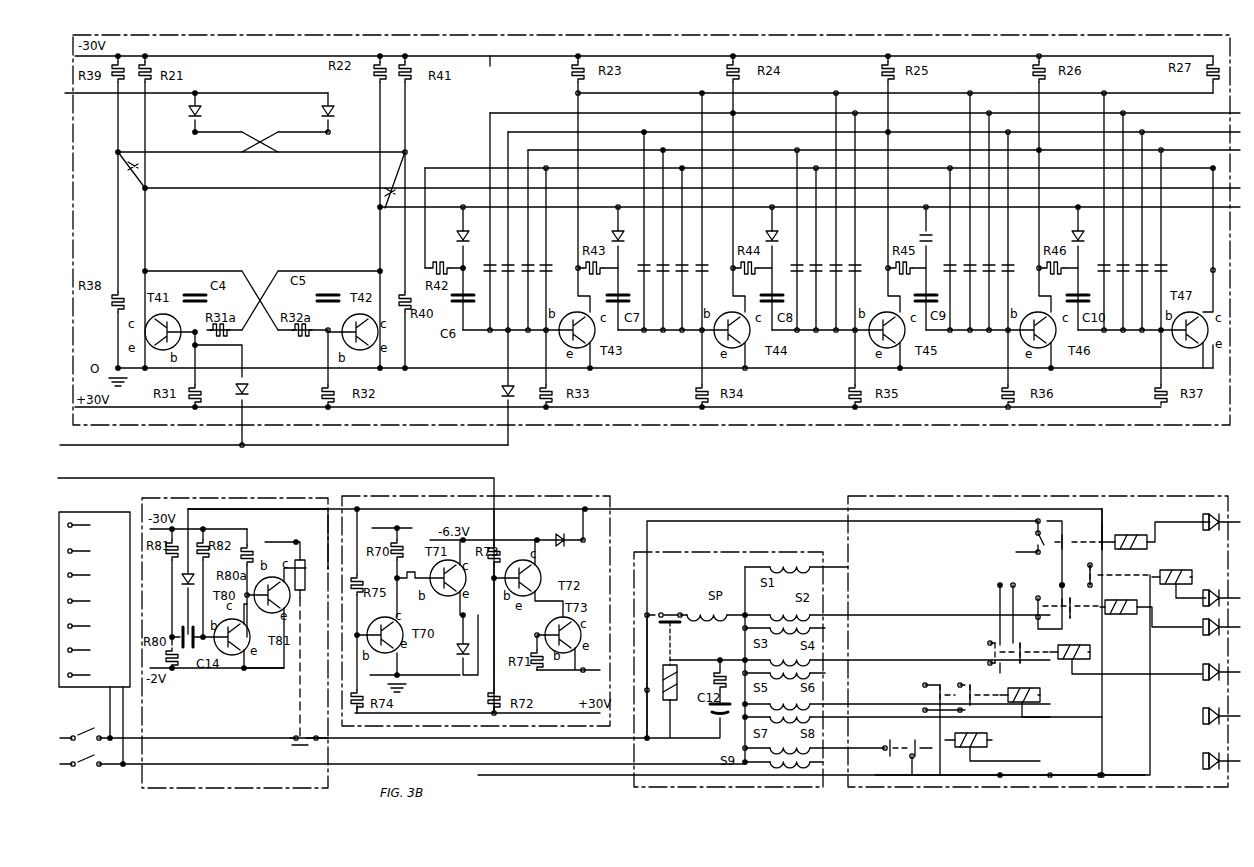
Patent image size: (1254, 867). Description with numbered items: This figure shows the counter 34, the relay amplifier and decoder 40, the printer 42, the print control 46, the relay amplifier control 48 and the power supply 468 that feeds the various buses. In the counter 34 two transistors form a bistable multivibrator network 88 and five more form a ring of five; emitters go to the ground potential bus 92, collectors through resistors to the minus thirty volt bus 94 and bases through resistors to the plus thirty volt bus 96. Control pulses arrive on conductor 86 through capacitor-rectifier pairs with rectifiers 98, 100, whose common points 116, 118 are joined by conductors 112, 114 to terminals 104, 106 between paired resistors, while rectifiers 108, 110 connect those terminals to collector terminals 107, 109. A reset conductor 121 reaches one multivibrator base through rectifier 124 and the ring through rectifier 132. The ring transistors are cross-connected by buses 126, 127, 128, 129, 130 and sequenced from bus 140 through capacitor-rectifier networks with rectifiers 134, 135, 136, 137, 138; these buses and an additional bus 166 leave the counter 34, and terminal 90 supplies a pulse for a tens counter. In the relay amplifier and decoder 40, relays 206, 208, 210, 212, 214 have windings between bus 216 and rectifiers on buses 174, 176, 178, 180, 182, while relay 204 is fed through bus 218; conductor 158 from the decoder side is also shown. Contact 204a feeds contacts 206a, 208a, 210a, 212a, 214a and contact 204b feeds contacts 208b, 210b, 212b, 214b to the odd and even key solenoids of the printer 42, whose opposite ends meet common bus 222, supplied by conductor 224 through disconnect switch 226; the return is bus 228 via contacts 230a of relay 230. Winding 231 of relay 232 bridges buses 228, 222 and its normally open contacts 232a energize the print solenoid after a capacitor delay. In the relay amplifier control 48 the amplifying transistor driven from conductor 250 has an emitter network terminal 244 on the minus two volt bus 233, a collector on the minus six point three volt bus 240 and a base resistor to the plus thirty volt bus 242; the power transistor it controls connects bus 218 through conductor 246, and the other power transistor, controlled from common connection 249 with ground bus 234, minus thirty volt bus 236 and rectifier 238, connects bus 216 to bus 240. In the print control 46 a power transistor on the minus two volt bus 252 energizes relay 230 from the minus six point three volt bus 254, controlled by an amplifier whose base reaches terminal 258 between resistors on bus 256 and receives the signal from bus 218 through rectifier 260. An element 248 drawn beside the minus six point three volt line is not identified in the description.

The counter 34 is at (775, 424).
The relay amplifier and decoder 40 is at (952, 496).
The printer 42 is at (724, 549).
The print control 46 is at (140, 782).
The relay amplifier control 48 is at (562, 494).
The conductor 86 is at (103, 93).
The bistable multivibrator network 88 is at (270, 121).
The terminal 90 is at (1210, 268).
The ground potential bus 92 is at (649, 369).
The bus 94 is at (490, 64).
The bus 96 is at (639, 408).
The rectifier 98 is at (189, 114).
The rectifier 100 is at (334, 114).
The common point or terminal 104 is at (116, 152).
The common point or terminal 106 is at (406, 153).
The terminal 107 is at (147, 190).
The rectifier 108 is at (116, 180).
The terminal 109 is at (376, 209).
The rectifier 110 is at (378, 179).
The conductor 112 is at (212, 139).
The conductor 114 is at (312, 136).
The point 116 is at (331, 132).
The point 118 is at (192, 132).
The conductor 121 is at (126, 448).
The rectifier 124 is at (250, 390).
The bus 126 is at (1156, 92).
The bus 127 is at (1190, 112).
The bus 128 is at (1206, 131).
The bus 129 is at (1203, 149).
The bus 130 is at (1200, 167).
The rectifier 132 is at (500, 388).
The rectifier 134 is at (458, 230).
The rectifier 135 is at (614, 230).
The rectifier 136 is at (770, 230).
The rectifier 137 is at (922, 230).
The rectifier 138 is at (1074, 230).
The bus 140 is at (1203, 206).
The additional bus 166 is at (1198, 187).
The conductor 158 is at (1214, 518).
The bus 174 is at (1214, 604).
The bus 176 is at (1218, 635).
The bus 178 is at (1218, 682).
The bus 180 is at (1218, 725).
The bus 182 is at (1218, 770).
The relay 204 is at (1142, 542).
The contacts 204a is at (1090, 530).
The contacts 204b is at (1038, 540).
The relay 206 is at (1176, 573).
The contacts 206a is at (1097, 565).
The relay 208 is at (1121, 603).
The contacts 208a is at (1070, 606).
The contacts 208b is at (1040, 606).
The relay 210 is at (1071, 648).
The contacts 210a is at (1020, 643).
The contacts 210b is at (993, 652).
The relay 212 is at (1021, 691).
The contacts 212a is at (967, 689).
The contacts 212b is at (940, 695).
The relay 214 is at (969, 736).
The contacts 214a is at (915, 762).
The contacts 214b is at (885, 747).
The bus 216 is at (478, 748).
The bus 218 is at (721, 509).
The common bus 222 is at (734, 577).
The conductor 224 is at (162, 764).
The disconnect switch 226 is at (97, 734).
The bus 228 is at (391, 740).
The relay 230 is at (300, 696).
The contacts 230a is at (297, 736).
The energizing winding 231 is at (676, 663).
The relay 232 is at (665, 698).
The normally opened contacts 232a is at (670, 604).
The bus 233 is at (568, 678).
The ground potential bus 234 is at (418, 676).
The bus 236 is at (412, 529).
The rectifier 238 is at (460, 650).
The bus 240 is at (502, 540).
The bus 242 is at (414, 714).
The intermediate terminal 244 is at (533, 636).
The conductor 246 is at (570, 560).
The diode 248 is at (561, 534).
The common connection 249 is at (362, 625).
The conductor 250 is at (168, 483).
The bus 252 is at (196, 673).
The bus 254 is at (306, 536).
The bus 256 is at (233, 528).
The common terminal 258 is at (172, 636).
The rectifier 260 is at (182, 587).
The power supply 468 is at (106, 506).